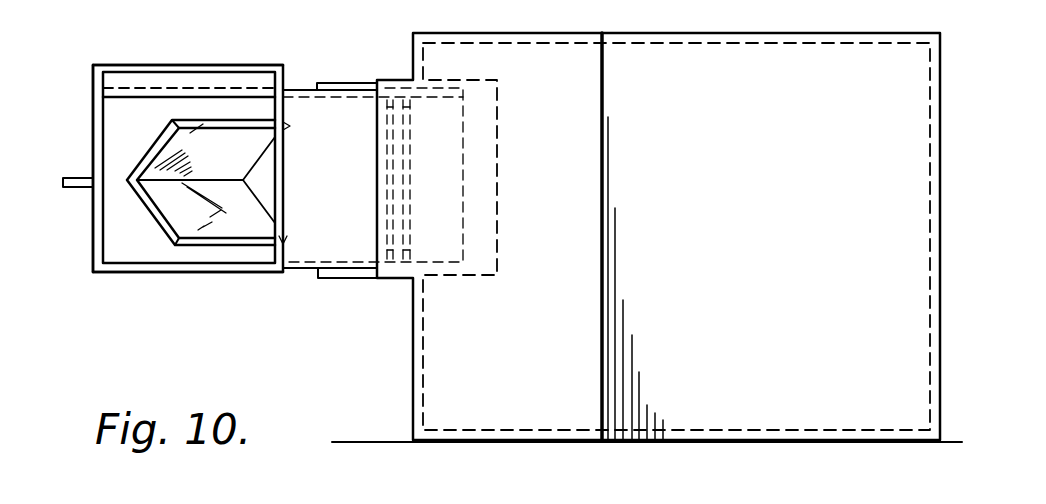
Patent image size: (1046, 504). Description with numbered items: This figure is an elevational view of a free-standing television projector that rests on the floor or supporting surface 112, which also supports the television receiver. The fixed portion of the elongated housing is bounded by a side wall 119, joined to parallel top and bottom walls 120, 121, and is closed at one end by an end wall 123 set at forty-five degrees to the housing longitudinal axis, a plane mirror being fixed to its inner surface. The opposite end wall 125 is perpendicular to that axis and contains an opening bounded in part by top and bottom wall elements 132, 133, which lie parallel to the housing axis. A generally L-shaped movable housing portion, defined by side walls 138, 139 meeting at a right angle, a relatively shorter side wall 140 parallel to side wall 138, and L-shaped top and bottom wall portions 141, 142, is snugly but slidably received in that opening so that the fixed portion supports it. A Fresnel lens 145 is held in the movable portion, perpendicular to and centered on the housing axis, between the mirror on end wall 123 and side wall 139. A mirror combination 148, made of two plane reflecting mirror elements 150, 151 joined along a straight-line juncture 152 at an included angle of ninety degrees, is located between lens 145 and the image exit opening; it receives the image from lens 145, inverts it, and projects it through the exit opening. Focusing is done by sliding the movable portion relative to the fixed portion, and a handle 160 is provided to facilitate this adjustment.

The supporting surface 112 is at (392, 441).
The side wall 119 is at (558, 426).
The top wall 120 is at (712, 33).
The bottom wall 121 is at (728, 440).
The end wall 123 is at (825, 105).
The end wall 125 is at (413, 50).
The top wall element 132 is at (377, 80).
The bottom wall element 133 is at (380, 282).
The side wall 138 is at (120, 255).
The side wall 139 is at (93, 258).
The side wall 140 is at (307, 248).
The top wall portion 141 is at (243, 64).
The bottom wall portion 142 is at (183, 273).
The lens 145 is at (395, 185).
The mirror combination 148 is at (250, 214).
The reflecting mirror element 150 is at (188, 215).
The reflecting mirror element 151 is at (195, 140).
The juncture 152 is at (232, 170).
The handle 160 is at (90, 158).